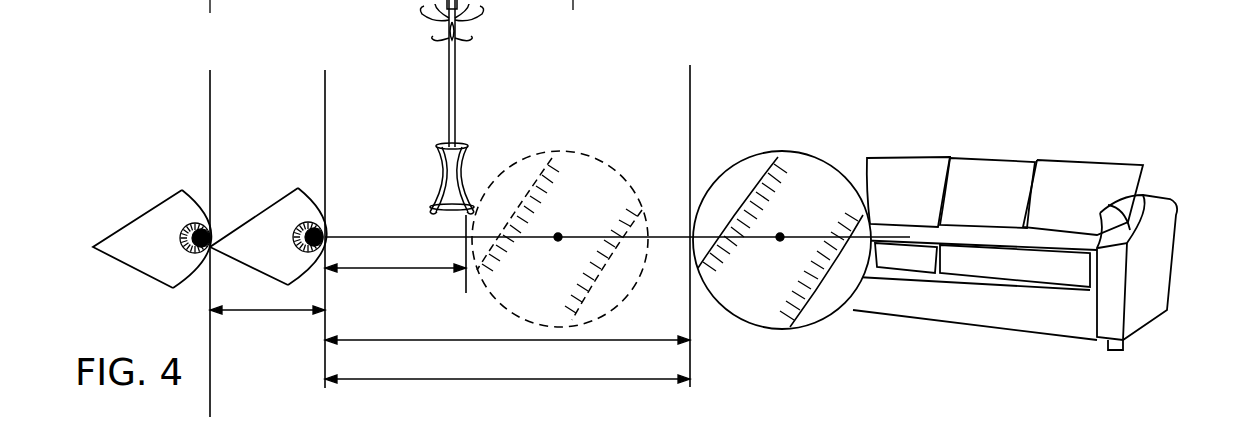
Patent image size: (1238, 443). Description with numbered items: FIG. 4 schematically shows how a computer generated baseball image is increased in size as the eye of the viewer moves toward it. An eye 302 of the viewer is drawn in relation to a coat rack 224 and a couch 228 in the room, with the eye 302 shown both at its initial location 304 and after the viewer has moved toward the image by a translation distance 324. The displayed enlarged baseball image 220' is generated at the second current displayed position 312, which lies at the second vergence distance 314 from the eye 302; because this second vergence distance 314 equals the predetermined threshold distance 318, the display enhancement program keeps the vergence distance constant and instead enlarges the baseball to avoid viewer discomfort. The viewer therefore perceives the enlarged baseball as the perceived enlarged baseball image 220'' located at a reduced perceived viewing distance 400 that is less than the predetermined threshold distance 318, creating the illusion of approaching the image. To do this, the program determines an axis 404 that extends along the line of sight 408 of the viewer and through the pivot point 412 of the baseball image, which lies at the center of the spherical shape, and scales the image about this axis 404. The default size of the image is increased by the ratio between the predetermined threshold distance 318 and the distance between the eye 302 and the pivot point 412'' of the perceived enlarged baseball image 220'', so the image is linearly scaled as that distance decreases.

The coat rack 224 is at (420, 16).
The couch 228 is at (1015, 160).
The eye 302 is at (156, 205).
The initial location 304 is at (136, 284).
The second current displayed position 312 is at (761, 134).
The second vergence distance 314 is at (527, 382).
The predetermined threshold distance 318 is at (438, 339).
The translation distance 324 is at (257, 312).
The reduced perceived viewing distance 400 is at (343, 270).
The axis 404 is at (392, 237).
The line of sight 408 is at (342, 226).
The pivot point 412 is at (768, 263).
The pivot point of the perceived enlarged baseball image 412'' is at (544, 263).
The displayed enlarged baseball image 220' is at (782, 225).
The perceived enlarged baseball image 220'' is at (560, 223).